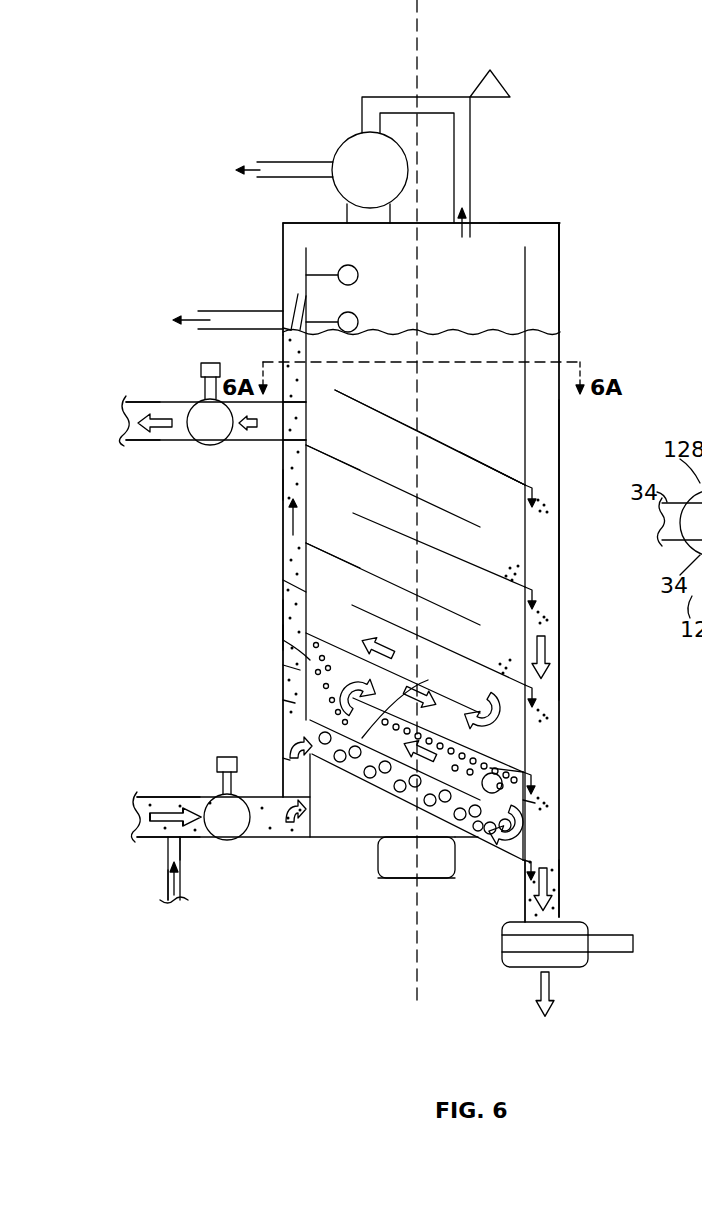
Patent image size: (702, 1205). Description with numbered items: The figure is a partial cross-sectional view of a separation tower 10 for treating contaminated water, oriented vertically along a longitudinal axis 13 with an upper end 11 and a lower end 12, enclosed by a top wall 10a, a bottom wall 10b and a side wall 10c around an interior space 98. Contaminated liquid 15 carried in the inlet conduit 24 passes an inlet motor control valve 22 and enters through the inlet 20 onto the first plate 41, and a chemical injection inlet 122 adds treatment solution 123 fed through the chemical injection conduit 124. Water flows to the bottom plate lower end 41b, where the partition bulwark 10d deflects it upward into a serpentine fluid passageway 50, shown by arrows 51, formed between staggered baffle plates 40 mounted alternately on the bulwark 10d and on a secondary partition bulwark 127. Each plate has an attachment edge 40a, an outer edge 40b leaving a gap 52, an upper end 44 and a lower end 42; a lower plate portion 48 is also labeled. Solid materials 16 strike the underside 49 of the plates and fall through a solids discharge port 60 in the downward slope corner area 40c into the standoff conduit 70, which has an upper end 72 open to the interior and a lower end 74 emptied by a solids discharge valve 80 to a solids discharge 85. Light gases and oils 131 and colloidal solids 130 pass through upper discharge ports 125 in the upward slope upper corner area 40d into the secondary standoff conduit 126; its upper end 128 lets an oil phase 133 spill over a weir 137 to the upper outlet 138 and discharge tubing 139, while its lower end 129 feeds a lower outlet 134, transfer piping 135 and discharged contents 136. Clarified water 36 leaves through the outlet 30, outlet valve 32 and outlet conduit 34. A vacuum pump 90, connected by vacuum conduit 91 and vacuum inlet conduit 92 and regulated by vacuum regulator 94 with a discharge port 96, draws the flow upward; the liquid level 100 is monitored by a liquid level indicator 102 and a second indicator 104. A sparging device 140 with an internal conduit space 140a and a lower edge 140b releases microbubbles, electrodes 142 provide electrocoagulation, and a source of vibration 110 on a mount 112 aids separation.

The separation tower 10 is at (552, 166).
The top wall 10a is at (517, 224).
The bottom wall 10b is at (455, 848).
The side wall 10c is at (283, 510).
The partition bulwark 10d is at (527, 292).
The upper end 11 is at (584, 220).
The lower end 12 is at (634, 887).
The longitudinal axis 13 is at (420, 30).
The contaminated liquid 15 is at (157, 834).
The solid materials 16 is at (520, 572).
The inlet 20 is at (290, 753).
The inlet motor control valve 22 is at (222, 800).
The inlet conduit 24 is at (150, 795).
The outlet 30 is at (310, 412).
The outlet valve 32 is at (205, 440).
The outlet conduit 34 is at (132, 402).
The treated water 36 is at (130, 444).
The baffle plate 40 is at (362, 470).
The baffle plate attachment edge 40a is at (310, 545).
The baffle plate outer edge 40b is at (339, 392).
The downward slope corner area 40c is at (518, 463).
The upward slope upper corner area 40d is at (316, 460).
The first plate 41 is at (340, 778).
The bottom plate lower end 41b is at (512, 862).
The plate lower end 42 is at (450, 446).
The plate upper end 44 is at (362, 406).
The lower plate 48 is at (447, 608).
The underside of the baffle plates 49 is at (487, 470).
The serpentine fluid passageway 50 is at (468, 680).
The arrows 51 is at (537, 862).
The gap 52 is at (295, 590).
The solids discharge port 60 is at (530, 480).
The standoff conduit 70 is at (557, 583).
The standoff conduit upper end 72 is at (553, 262).
The standoff conduit lower end 74 is at (560, 918).
The solids discharge valve 80 is at (578, 962).
The solids discharge 85 is at (555, 1000).
The vacuum pump 90 is at (347, 140).
The vacuum conduit 91 is at (473, 150).
The vacuum inlet conduit 92 is at (466, 240).
The vacuum regulator 94 is at (505, 80).
The discharge port 96 is at (268, 162).
The interior space 98 is at (330, 226).
The liquid level 100 is at (452, 330).
The liquid level indicator 102 is at (358, 328).
The second water level indicator switch 104 is at (355, 265).
The source of vibration 110 is at (400, 878).
The mount 112 is at (362, 840).
The chemical injection inlet 122 is at (180, 850).
The treatment solution 123 is at (168, 860).
The chemical injection conduit 124 is at (183, 892).
The upper discharge port 125 is at (283, 530).
The secondary standoff conduit 126 is at (283, 485).
The secondary partition bulwark 127 is at (306, 268).
The secondary standoff conduit upper end 128 is at (285, 242).
The secondary standoff conduit lower end 129 is at (300, 650).
The colloidal or suspended solids 130 is at (283, 615).
The light gasses and oils 131 is at (283, 632).
The oil phase 133 is at (283, 300).
The secondary standoff conduit lower outlet 134 is at (295, 668).
The transfer piping 135 is at (290, 700).
The discharged contents 136 is at (278, 760).
The weir 137 is at (302, 316).
The secondary standoff conduit upper outlet 138 is at (283, 328).
The secondary standoff conduit upper discharge tubing 139 is at (203, 328).
The sparging device 140 is at (527, 765).
The internal conduit space 140a is at (527, 768).
The plate lower edge 140b is at (537, 805).
The electrodes 142 is at (370, 788).